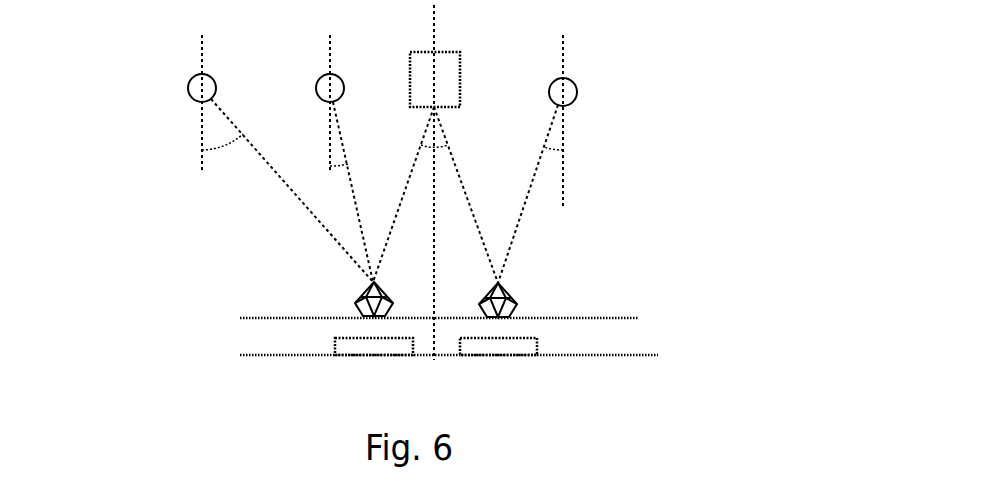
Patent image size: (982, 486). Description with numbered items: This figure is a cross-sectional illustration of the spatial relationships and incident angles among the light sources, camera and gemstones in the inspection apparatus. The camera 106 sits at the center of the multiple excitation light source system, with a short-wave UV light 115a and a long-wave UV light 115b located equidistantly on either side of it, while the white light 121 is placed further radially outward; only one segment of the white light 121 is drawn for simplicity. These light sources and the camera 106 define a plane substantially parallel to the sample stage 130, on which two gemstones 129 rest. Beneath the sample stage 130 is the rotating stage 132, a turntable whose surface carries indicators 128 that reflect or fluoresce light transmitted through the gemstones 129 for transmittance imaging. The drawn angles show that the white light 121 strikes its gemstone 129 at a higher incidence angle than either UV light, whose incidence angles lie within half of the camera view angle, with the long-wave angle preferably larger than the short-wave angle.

The white light 121 is at (188, 93).
The short-wave UV light 115a is at (317, 88).
The camera 106 is at (503, 60).
The long-wave UV light 115b is at (577, 100).
The gemstone 129 is at (516, 295).
The sample stage 130 is at (260, 314).
The indicators 128 is at (538, 346).
The rotating stage 132 is at (252, 361).